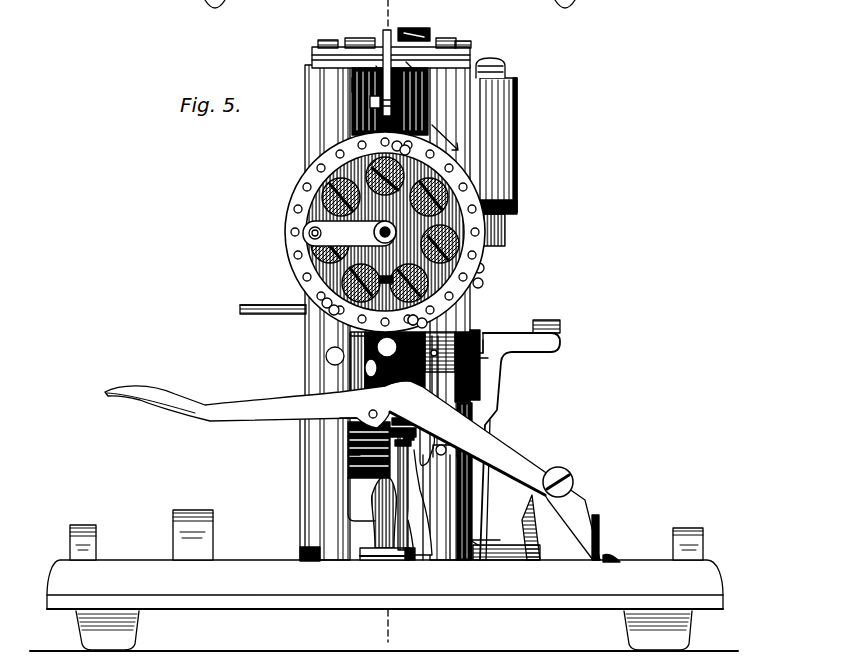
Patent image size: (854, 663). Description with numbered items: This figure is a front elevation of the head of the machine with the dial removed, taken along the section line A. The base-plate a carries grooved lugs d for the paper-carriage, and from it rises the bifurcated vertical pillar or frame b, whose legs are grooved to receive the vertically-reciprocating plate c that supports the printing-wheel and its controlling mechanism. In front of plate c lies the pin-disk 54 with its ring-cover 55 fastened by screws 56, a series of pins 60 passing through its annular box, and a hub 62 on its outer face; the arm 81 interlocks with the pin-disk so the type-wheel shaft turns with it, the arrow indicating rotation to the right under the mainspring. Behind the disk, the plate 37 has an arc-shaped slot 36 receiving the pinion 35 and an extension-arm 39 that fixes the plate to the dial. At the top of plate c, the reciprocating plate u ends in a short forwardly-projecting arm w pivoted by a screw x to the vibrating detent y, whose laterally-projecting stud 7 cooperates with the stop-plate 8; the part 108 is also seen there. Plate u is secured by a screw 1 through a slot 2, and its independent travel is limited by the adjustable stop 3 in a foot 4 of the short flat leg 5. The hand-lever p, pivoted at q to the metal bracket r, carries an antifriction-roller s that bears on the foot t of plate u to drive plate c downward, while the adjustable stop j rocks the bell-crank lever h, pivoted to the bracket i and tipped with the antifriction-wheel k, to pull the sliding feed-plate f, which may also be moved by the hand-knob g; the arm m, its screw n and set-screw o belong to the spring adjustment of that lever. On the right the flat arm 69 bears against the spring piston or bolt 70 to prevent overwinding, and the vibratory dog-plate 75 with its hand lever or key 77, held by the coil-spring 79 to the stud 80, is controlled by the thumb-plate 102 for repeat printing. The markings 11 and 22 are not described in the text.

The base-plate a is at (384, 605).
The lugs d is at (183, 523).
The vibrating detent y is at (390, 40).
The plate 108 is at (423, 23).
The laterally-projecting stud 7 is at (378, 68).
The stop-plate 8 is at (410, 65).
The forwardly-projecting arm w is at (352, 85).
The screw x is at (373, 102).
The hand lever or key 77 is at (534, 199).
The spring piston or bolt 70 is at (518, 214).
The flat arm 69 is at (508, 248).
The screws 56 is at (293, 236).
The pins 60 is at (299, 200).
The ring-cover 55 is at (306, 179).
The pin-disk 54 is at (398, 228).
The hub 62 is at (349, 233).
The pinion 35 is at (398, 239).
The arc-shaped slot 36 is at (403, 263).
The extension-arm 39 is at (409, 308).
The arm 81 is at (316, 233).
The shelf 22 is at (265, 301).
The slot 2 is at (347, 343).
The stud 80 is at (327, 358).
The vertically-reciprocating plate c is at (470, 368).
The plate 37 is at (475, 332).
The vibratory dog-plate 75 is at (485, 374).
The thumb-plate 102 is at (500, 340).
The adjustable stop 3 is at (352, 470).
The antifriction-roller s is at (352, 425).
The foot t is at (347, 437).
The short flat leg 5 is at (347, 445).
The foot 4 is at (350, 455).
The hand-knob g is at (349, 515).
The sliding feed-plate f is at (367, 563).
The bell-crank lever h is at (398, 468).
The bracket i is at (395, 470).
The antifriction-wheel k is at (413, 462).
The adjustable stop j is at (417, 433).
The hand-lever p is at (352, 470).
The reciprocating plate u is at (337, 405).
The screw 1 is at (364, 404).
The coil-spring 79 is at (403, 392).
The pivot q is at (571, 473).
The metal bracket r is at (537, 515).
The vertical pillar or frame b is at (285, 490).
The remnant 11 is at (243, 10).
The arm m is at (529, 9).
The set-screw o is at (526, 20).
The screw n is at (643, 13).
The section line A is at (379, 327).